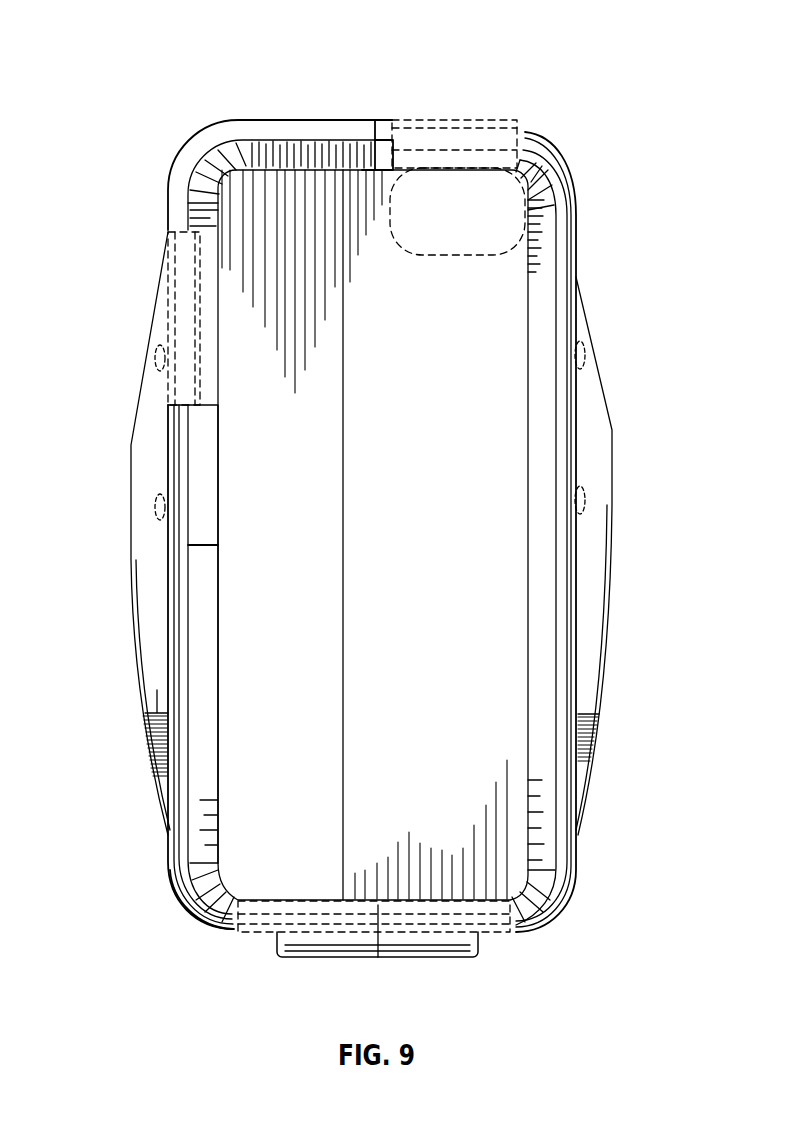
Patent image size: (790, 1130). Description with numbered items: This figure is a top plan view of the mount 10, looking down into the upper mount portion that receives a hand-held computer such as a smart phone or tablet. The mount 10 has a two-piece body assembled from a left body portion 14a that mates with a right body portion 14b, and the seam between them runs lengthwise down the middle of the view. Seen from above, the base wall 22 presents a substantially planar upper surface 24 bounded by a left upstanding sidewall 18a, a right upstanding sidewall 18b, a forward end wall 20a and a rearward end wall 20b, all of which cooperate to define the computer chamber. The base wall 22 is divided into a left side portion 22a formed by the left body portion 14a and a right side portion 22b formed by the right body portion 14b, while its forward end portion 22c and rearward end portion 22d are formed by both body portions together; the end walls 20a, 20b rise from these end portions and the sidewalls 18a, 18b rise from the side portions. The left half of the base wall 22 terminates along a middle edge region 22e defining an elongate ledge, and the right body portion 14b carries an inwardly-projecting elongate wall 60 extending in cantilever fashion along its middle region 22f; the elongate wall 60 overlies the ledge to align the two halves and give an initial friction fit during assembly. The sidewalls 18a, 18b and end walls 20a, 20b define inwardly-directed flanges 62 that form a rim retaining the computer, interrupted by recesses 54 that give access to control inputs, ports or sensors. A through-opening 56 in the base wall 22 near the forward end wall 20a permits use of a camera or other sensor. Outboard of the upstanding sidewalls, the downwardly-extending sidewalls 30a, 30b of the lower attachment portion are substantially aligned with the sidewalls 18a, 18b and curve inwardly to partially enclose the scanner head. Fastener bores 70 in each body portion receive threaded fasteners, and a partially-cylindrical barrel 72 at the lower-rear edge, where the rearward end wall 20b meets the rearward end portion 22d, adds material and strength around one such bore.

The mount 10 is at (130, 29).
The left body portion 14a is at (173, 176).
The right body portion 14b is at (577, 232).
The left upstanding sidewall 18a is at (178, 445).
The right upstanding sidewall 18b is at (572, 422).
The forward end wall 20a is at (347, 120).
The rearward end wall 20b is at (233, 932).
The base wall 22 is at (415, 465).
The left side portion of base wall 22a is at (330, 624).
The right side portion of base wall 22b is at (517, 670).
The forward end portion of base wall 22c is at (314, 202).
The rearward end portion of base wall 22d is at (394, 874).
The middle edge region 22e is at (330, 772).
The middle region 22f is at (348, 710).
The upper surface 24 is at (370, 617).
The left downwardly-extending sidewall 30a is at (132, 505).
The right downwardly-extending sidewall 30b is at (610, 568).
The recess 54 is at (489, 121).
The through-opening 56 is at (432, 196).
The elongate wall 60 is at (358, 395).
The inwardly-directed flange 62 is at (311, 162).
The fastener bore 70 is at (158, 357).
The partially-cylindrical barrel 72 is at (315, 957).